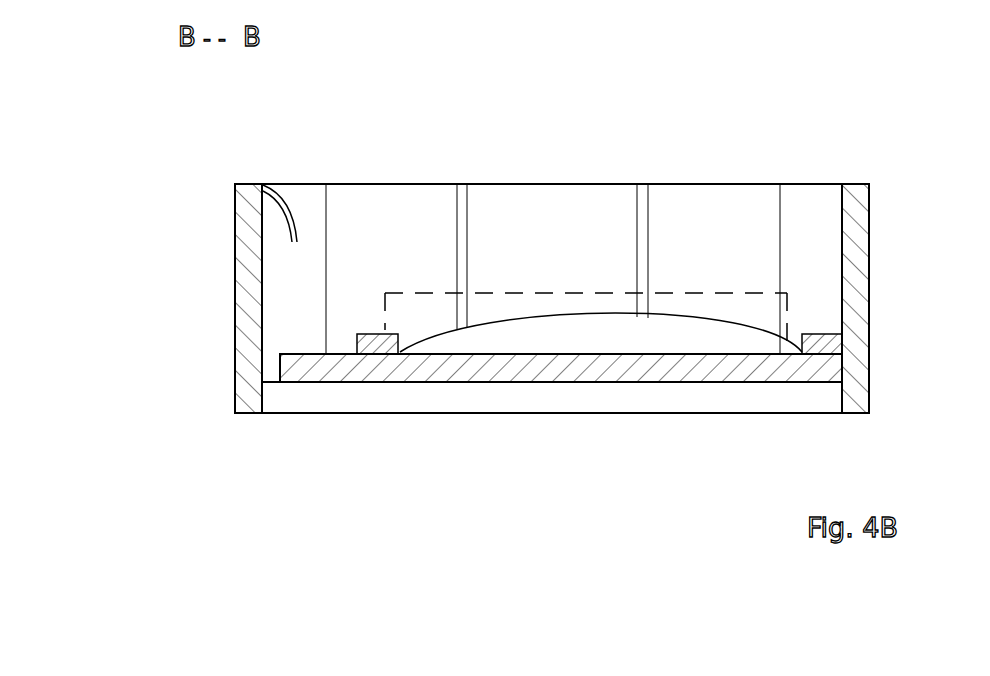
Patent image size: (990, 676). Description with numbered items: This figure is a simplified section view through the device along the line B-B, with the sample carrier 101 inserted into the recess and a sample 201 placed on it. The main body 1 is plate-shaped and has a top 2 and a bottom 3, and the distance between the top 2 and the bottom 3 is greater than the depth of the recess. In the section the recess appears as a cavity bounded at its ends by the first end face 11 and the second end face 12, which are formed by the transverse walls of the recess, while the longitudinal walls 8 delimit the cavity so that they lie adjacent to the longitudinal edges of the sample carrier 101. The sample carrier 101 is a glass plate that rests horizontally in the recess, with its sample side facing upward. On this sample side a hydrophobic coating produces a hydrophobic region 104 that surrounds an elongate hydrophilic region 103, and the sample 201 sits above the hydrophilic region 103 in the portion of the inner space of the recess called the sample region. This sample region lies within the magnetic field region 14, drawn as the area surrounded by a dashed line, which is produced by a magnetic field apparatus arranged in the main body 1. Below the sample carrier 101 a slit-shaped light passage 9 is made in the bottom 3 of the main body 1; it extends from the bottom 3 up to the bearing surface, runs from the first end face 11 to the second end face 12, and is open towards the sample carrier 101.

The main body 1 is at (235, 205).
The top 2 is at (493, 182).
The bottom 3 is at (465, 415).
The longitudinal walls 8 is at (407, 248).
The light passage 9 is at (626, 411).
The first end face 11 is at (265, 260).
The second end face 12 is at (840, 223).
The magnetic field region 14 is at (725, 312).
The sample carrier 101 is at (742, 368).
The hydrophilic region 103 is at (592, 351).
The hydrophobic region 104 is at (366, 334).
The sample 201 is at (505, 340).